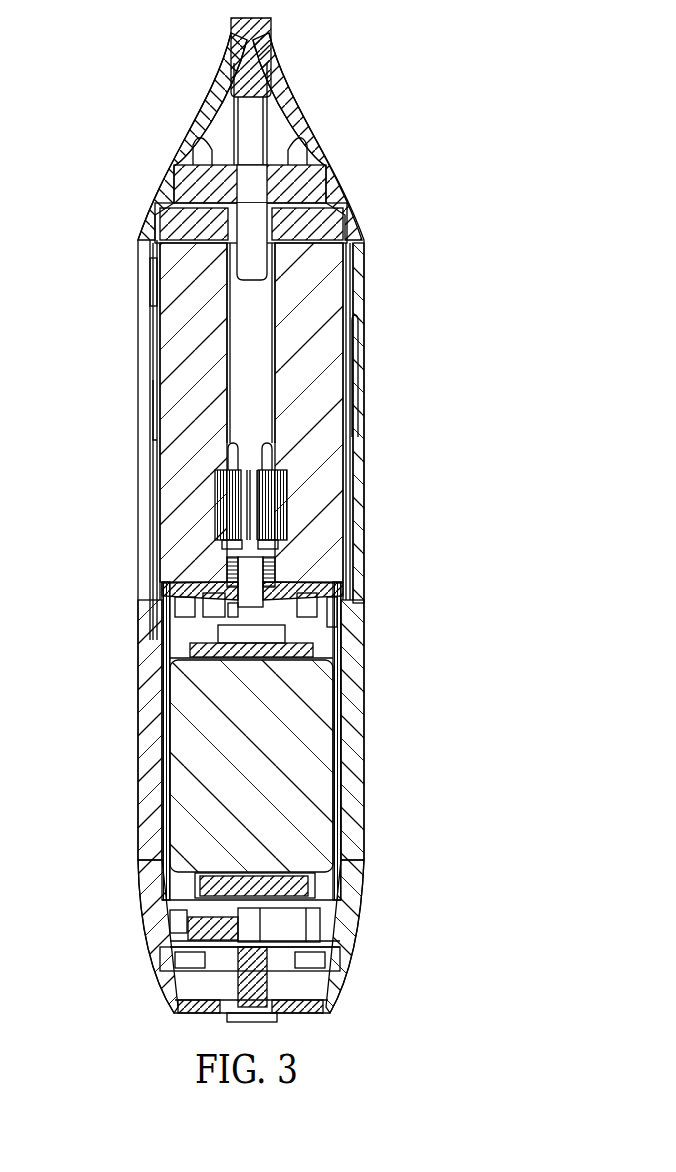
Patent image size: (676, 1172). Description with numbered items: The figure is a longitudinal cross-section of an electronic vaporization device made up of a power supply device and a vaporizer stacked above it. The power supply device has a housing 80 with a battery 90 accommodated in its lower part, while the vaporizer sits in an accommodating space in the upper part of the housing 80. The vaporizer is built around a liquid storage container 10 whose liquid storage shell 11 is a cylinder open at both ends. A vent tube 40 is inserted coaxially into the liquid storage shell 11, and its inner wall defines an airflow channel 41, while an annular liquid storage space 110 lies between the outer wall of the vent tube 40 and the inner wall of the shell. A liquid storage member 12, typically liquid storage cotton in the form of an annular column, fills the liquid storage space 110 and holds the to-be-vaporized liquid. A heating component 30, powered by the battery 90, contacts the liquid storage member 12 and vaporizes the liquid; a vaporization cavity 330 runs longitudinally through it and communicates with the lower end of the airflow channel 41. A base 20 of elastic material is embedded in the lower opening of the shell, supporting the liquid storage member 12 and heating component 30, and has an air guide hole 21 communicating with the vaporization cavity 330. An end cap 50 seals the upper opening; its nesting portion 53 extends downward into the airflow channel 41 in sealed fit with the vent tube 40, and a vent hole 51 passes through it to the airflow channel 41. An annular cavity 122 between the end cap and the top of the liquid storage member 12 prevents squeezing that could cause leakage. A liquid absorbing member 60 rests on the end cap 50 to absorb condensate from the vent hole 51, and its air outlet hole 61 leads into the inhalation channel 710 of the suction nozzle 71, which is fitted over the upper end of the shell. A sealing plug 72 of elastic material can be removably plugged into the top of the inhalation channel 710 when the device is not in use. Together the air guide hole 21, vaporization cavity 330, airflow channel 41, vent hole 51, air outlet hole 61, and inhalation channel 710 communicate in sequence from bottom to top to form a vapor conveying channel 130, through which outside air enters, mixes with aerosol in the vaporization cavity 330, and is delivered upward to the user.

The liquid storage container 10 is at (348, 457).
The liquid storage shell 11 is at (150, 493).
The liquid storage member 12 is at (183, 352).
The base 20 is at (180, 605).
The air guide hole 21 is at (345, 617).
The heating component 30 is at (288, 505).
The vent tube 40 is at (285, 392).
The airflow channel 41 is at (262, 325).
The end cap 50 is at (318, 212).
The vent hole 51 is at (246, 235).
The nesting portion 53 is at (208, 245).
The liquid absorbing member 60 is at (305, 178).
The air outlet hole 61 is at (245, 190).
The suction nozzle 71 is at (195, 125).
The sealing plug 72 is at (265, 62).
The housing 80 is at (152, 800).
The battery 90 is at (200, 720).
The liquid storage space 110 is at (180, 412).
The annular cavity 122 is at (345, 252).
The vapor conveying channel 130 is at (200, 322).
The vaporization cavity 330 is at (232, 548).
The inhalation channel 710 is at (256, 128).